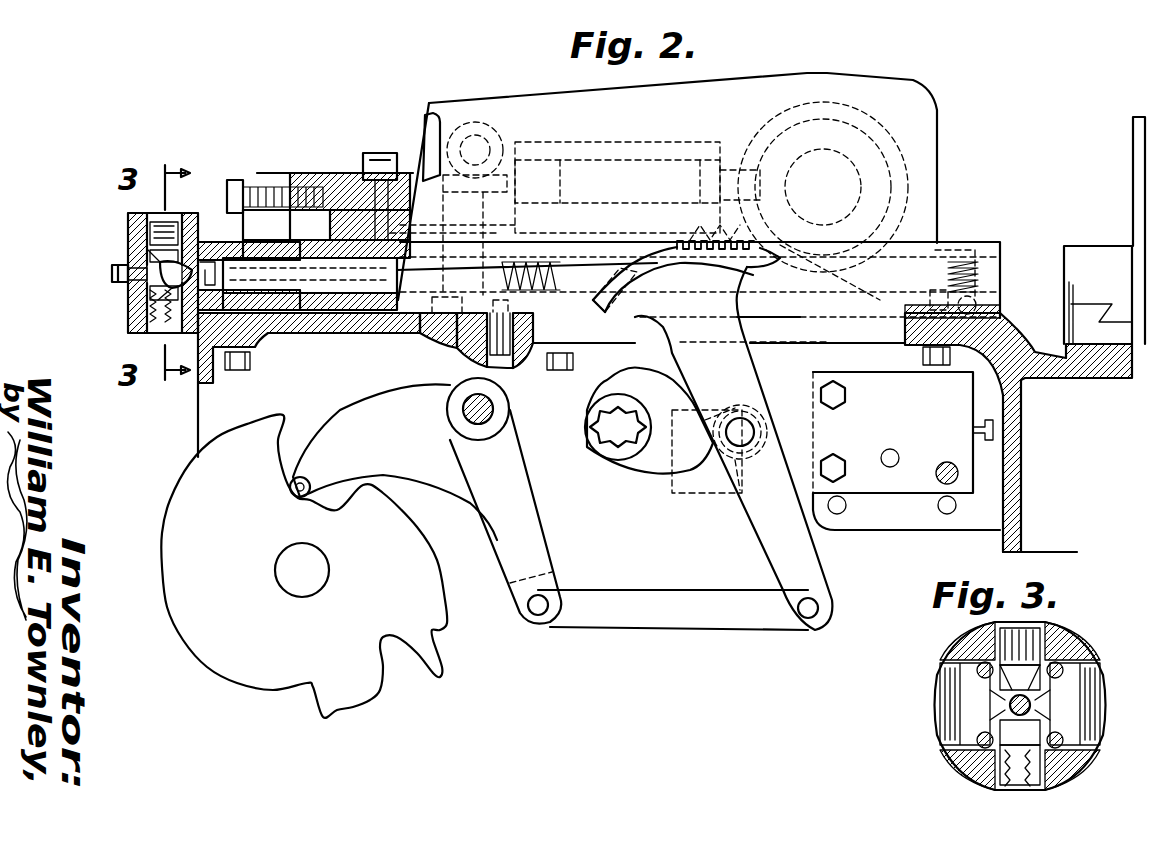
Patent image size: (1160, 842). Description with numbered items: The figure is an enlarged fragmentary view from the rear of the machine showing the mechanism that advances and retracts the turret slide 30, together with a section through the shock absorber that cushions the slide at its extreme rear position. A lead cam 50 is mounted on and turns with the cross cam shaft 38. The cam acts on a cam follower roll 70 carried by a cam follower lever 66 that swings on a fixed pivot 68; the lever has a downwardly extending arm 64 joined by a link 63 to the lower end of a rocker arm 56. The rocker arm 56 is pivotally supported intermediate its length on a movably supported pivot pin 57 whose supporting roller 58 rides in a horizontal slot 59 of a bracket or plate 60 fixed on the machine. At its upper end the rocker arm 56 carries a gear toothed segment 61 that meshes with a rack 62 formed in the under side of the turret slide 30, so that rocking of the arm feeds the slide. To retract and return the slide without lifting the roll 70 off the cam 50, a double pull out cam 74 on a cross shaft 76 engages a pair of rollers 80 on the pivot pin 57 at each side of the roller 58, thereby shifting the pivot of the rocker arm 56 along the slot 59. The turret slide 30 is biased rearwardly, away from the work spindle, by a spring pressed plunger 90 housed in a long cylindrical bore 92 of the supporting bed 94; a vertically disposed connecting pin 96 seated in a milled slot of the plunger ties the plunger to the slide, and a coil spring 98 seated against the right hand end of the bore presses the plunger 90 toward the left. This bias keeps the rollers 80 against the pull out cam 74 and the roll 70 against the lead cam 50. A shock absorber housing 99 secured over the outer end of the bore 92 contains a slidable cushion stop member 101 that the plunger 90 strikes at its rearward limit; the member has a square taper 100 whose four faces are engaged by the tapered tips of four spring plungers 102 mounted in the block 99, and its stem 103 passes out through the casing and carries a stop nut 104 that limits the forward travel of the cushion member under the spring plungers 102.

In FIG. 2, the turret slide 30 is at (925, 148).
In FIG. 2, the cross cam shaft 38 is at (310, 566).
In FIG. 2, the lead cam 50 is at (248, 658).
In FIG. 2, the rocker arm 56 is at (680, 350).
In FIG. 2, the pivot pin 57 is at (745, 430).
In FIG. 2, the supporting roller 58 is at (752, 410).
In FIG. 2, the horizontal slot 59 is at (688, 480).
In FIG. 2, the bracket or plate 60 is at (910, 475).
In FIG. 2, the gear toothed segment 61 is at (740, 270).
In FIG. 2, the rack 62 is at (682, 240).
In FIG. 2, the link 63 is at (638, 597).
In FIG. 2, the downwardly extending arm 64 is at (530, 505).
In FIG. 2, the cam follower lever 66 is at (374, 403).
In FIG. 2, the fixed pivot 68 is at (472, 400).
In FIG. 2, the cam follower roll 70 is at (312, 480).
In FIG. 2, the double pull out cam 74 is at (658, 452).
In FIG. 2, the cross shaft 76 is at (600, 420).
In FIG. 2, the rollers 80 is at (732, 465).
In FIG. 2, the spring pressed plunger 90 is at (315, 270).
In FIG. 2, the cylindrical bore 92 is at (930, 262).
In FIG. 2, the supporting bed 94 is at (990, 266).
In FIG. 2, the connecting pin 96 is at (432, 180).
In FIG. 2, the coil spring 98 is at (975, 262).
In FIG. 2, the shock absorber housing 99 is at (128, 318).
In FIG. 2, the square taper 100 is at (190, 250).
In FIG. 2, the cushion stop member 101 is at (245, 245).
In FIG. 2, the spring plungers 102 is at (150, 252).
In FIG. 3, the spring plungers 102 is at (1060, 705).
In FIG. 2, the stem 103 is at (157, 262).
In FIG. 2, the stop nut 104 is at (112, 273).
In FIG. 3, the stop nut 104 is at (962, 650).